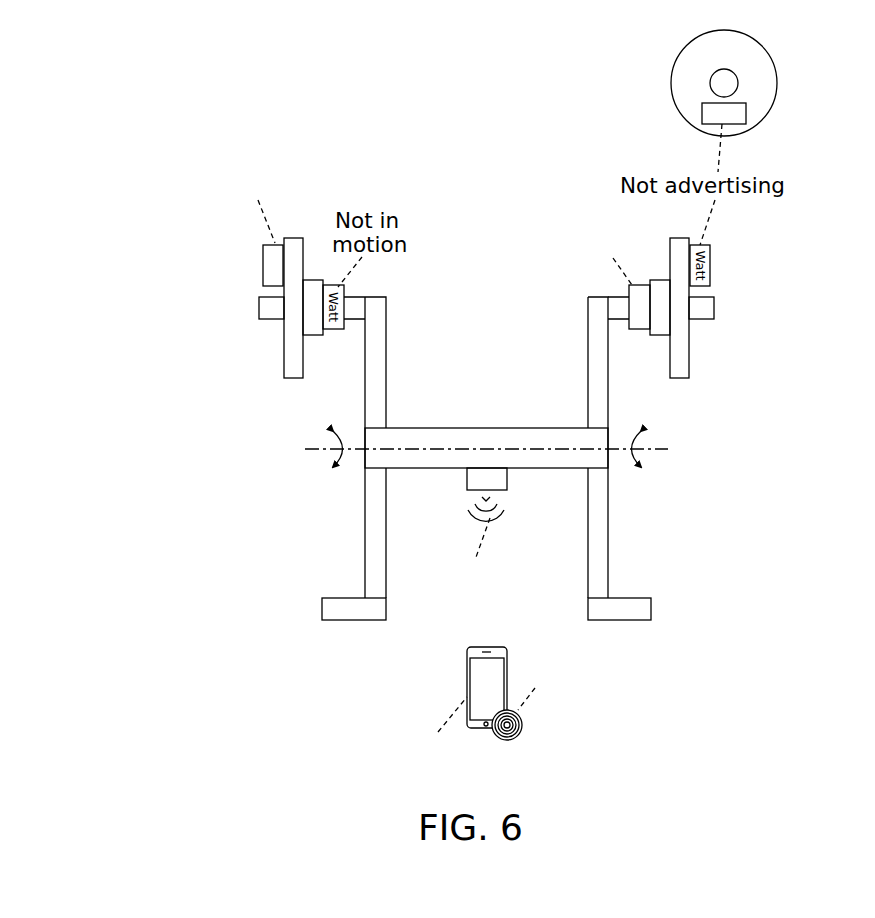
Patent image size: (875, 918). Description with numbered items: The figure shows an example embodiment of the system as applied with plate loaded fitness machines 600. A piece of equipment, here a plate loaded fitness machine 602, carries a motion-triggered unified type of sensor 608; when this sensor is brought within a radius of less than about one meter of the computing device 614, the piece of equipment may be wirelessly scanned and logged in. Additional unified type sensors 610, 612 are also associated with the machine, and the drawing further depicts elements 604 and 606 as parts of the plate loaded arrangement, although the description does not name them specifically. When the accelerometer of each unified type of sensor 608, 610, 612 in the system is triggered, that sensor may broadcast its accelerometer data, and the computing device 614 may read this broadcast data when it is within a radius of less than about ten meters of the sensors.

The plate loaded fitness machines 600 is at (154, 230).
The plate loaded fitness machine 602 is at (365, 458).
The weight plate 604 is at (284, 362).
The unmounted weight plate 606 is at (777, 83).
The unified type of sensor 608 is at (507, 480).
The unified type of sensor 610 is at (637, 327).
The unified type of sensor 612 is at (263, 262).
The computing device 614 is at (467, 670).